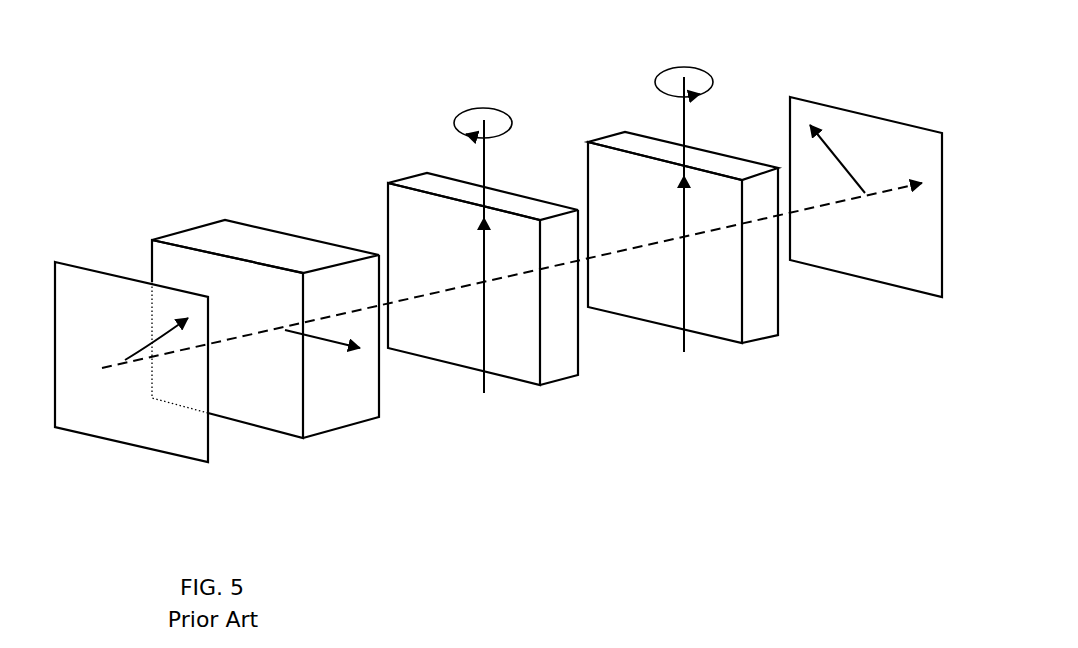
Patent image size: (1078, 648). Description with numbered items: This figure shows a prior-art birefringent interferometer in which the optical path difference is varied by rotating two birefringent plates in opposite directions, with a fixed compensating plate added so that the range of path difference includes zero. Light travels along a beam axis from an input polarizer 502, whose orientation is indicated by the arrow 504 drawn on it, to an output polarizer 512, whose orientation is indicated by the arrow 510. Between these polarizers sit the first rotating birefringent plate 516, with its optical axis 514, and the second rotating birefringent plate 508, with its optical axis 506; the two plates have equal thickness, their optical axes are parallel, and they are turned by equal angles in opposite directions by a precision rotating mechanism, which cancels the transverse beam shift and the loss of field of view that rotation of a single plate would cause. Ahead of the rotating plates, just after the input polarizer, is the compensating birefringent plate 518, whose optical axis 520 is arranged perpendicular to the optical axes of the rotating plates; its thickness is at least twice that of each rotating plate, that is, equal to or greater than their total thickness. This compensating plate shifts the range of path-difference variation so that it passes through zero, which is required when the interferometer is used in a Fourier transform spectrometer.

The input polarizer plate 502 is at (102, 262).
The input polarization direction arrow 504 is at (152, 368).
The polarization direction in second rotator 506 is at (670, 207).
The second Faraday rotator 508 is at (610, 130).
The output polarization direction arrow 510 is at (815, 117).
The output polarizer plate 512 is at (873, 102).
The polarization direction in first rotator 514 is at (473, 248).
The first Faraday rotator 516 is at (410, 172).
The compensating birefringent plate 518 is at (223, 212).
The optical axis 520 is at (323, 353).